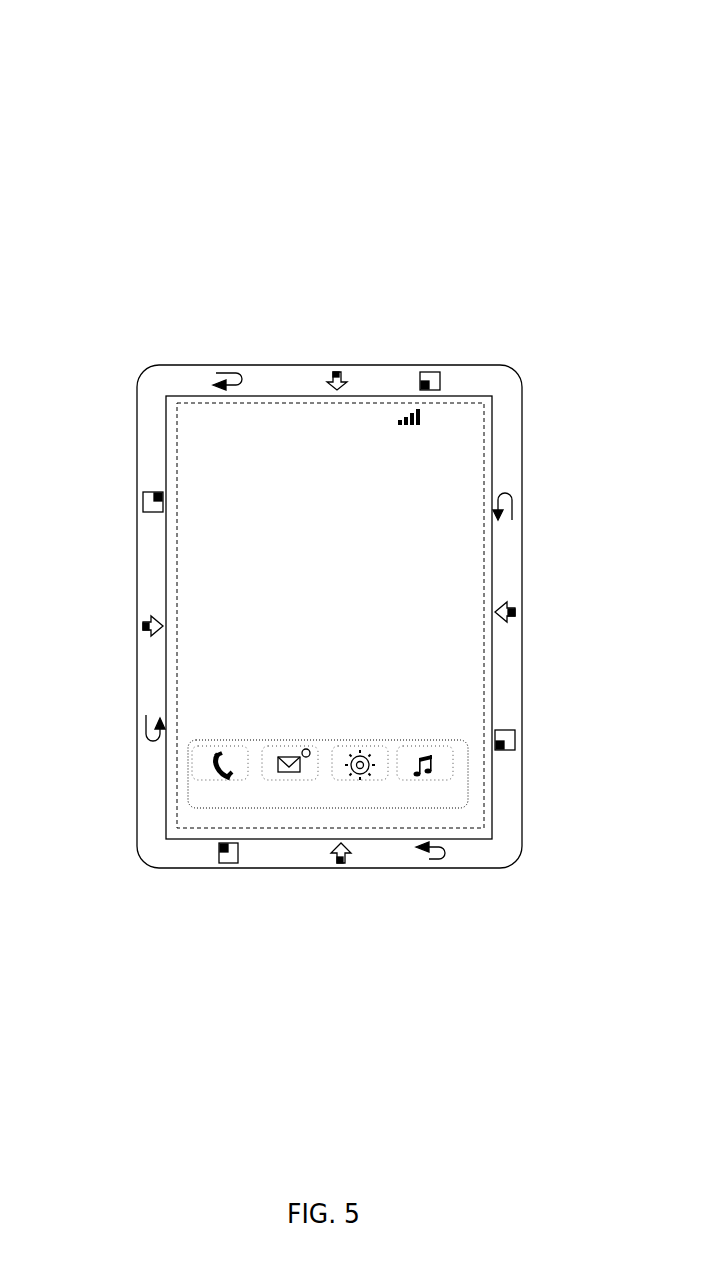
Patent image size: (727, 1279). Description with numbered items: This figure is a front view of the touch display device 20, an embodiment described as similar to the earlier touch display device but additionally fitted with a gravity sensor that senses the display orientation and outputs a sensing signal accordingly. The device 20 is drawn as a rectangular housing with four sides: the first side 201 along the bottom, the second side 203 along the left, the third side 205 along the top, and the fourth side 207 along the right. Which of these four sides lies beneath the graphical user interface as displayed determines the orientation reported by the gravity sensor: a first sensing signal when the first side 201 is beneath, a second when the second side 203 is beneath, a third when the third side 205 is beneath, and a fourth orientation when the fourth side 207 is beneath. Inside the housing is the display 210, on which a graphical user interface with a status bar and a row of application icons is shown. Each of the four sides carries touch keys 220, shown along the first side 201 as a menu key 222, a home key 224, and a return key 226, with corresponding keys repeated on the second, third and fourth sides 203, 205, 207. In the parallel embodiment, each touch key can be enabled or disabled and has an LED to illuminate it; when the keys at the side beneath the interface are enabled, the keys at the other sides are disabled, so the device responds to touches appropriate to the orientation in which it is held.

The touch display device 20 is at (345, 96).
The first side 201 is at (490, 868).
The second side 203 is at (137, 683).
The third side 205 is at (315, 365).
The fourth side 207 is at (522, 682).
The display screen 210 is at (172, 396).
The bottom bezel touch control region 220 is at (330, 905).
The menu key icon 222 is at (228, 863).
The home key icon 224 is at (341, 863).
The back key icon 226 is at (431, 880).